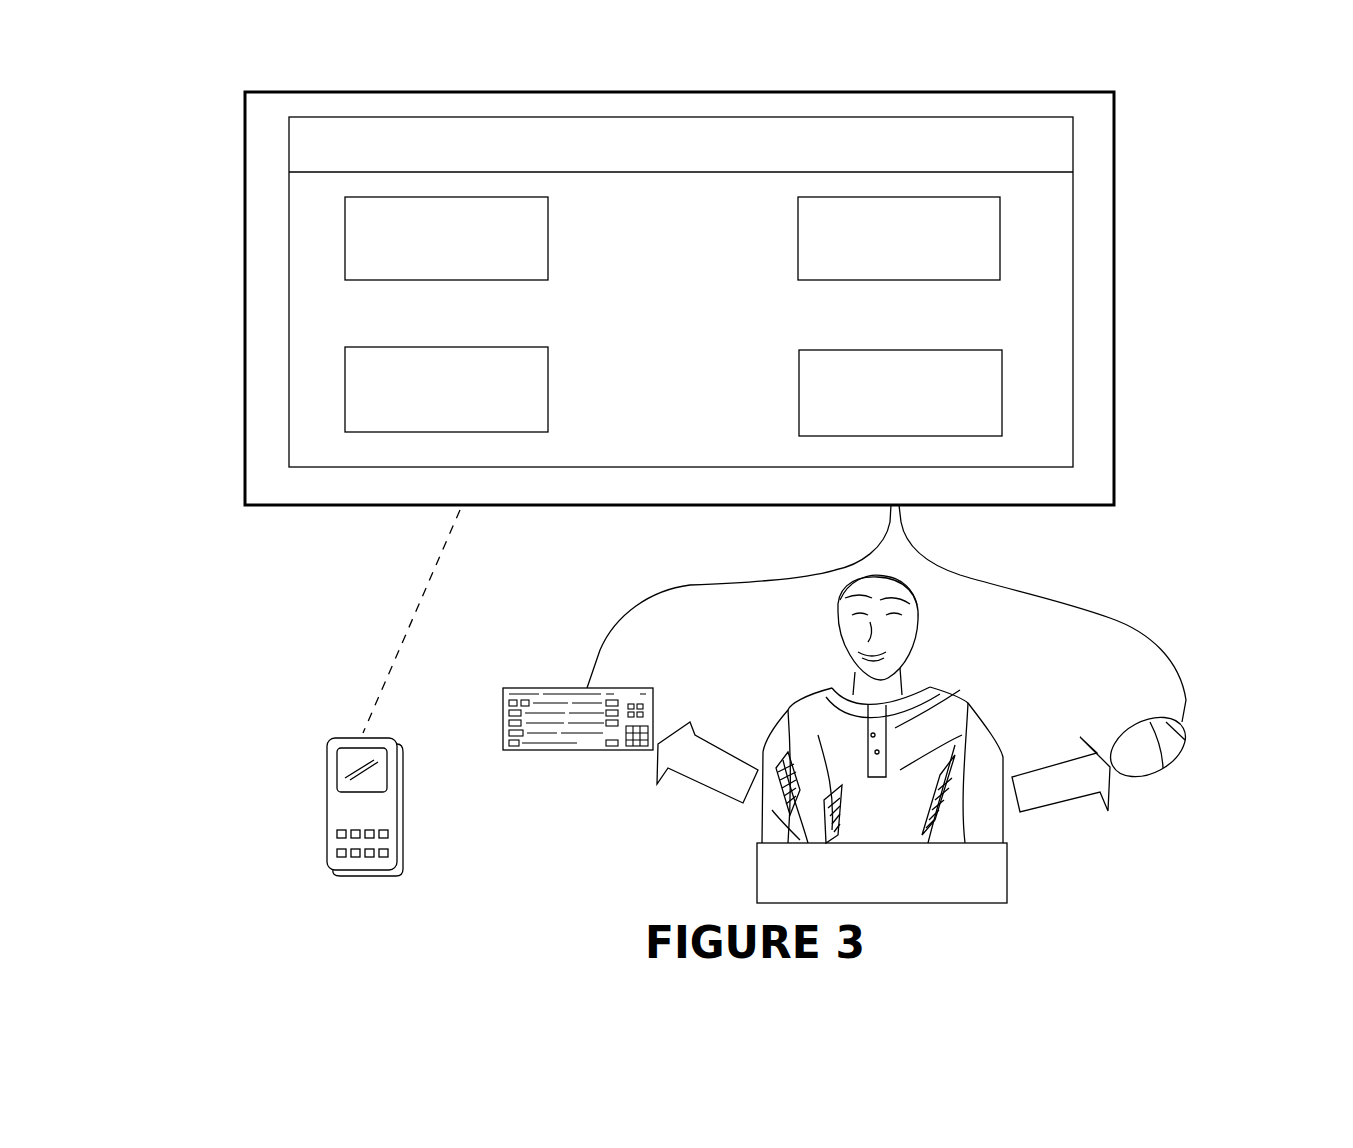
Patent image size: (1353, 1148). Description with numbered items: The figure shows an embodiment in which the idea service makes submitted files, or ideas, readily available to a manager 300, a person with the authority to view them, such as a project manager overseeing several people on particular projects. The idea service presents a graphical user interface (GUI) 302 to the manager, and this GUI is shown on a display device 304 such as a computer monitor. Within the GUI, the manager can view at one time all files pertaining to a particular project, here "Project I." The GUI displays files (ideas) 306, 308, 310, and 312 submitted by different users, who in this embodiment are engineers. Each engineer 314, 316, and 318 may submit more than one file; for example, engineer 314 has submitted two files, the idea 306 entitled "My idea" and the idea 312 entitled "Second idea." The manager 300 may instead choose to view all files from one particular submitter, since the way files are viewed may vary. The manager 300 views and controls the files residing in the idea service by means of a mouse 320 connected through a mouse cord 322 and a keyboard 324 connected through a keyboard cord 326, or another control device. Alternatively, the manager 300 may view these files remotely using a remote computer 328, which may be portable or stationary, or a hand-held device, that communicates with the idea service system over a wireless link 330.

The manager 300 is at (778, 700).
The graphical user interface (GUI) 302 is at (962, 117).
The display device 304 is at (312, 92).
The file (idea) 306 is at (345, 262).
The file (idea) 308 is at (345, 431).
The file (idea) 310 is at (1000, 243).
The file (idea) 312 is at (1002, 380).
The engineer 314 is at (548, 228).
The engineer 316 is at (588, 398).
The engineer 318 is at (798, 237).
The mouse 320 is at (1170, 760).
The mouse cord 322 is at (1133, 615).
The keyboard 324 is at (520, 752).
The keyboard cord 326 is at (607, 647).
The remote computer 328 is at (327, 852).
The wireless link 330 is at (413, 627).